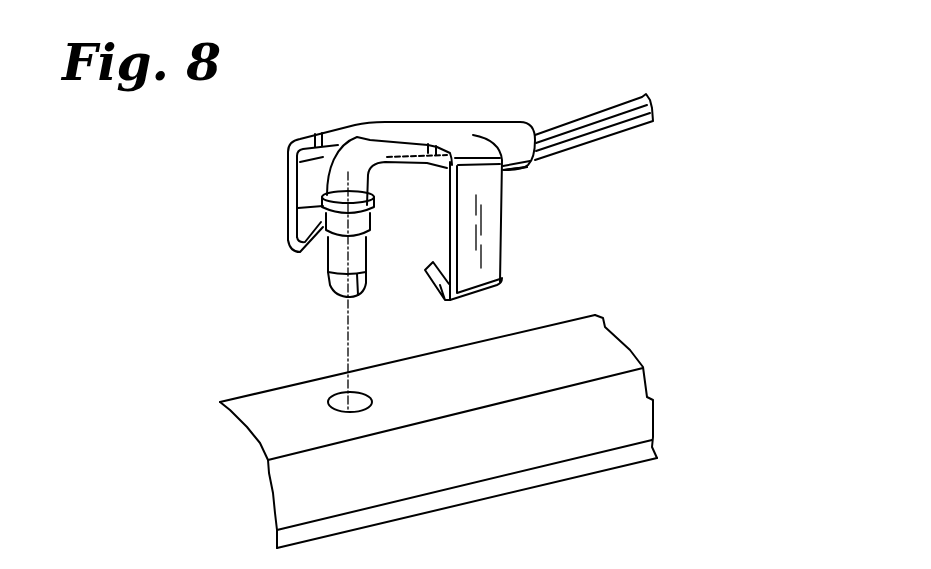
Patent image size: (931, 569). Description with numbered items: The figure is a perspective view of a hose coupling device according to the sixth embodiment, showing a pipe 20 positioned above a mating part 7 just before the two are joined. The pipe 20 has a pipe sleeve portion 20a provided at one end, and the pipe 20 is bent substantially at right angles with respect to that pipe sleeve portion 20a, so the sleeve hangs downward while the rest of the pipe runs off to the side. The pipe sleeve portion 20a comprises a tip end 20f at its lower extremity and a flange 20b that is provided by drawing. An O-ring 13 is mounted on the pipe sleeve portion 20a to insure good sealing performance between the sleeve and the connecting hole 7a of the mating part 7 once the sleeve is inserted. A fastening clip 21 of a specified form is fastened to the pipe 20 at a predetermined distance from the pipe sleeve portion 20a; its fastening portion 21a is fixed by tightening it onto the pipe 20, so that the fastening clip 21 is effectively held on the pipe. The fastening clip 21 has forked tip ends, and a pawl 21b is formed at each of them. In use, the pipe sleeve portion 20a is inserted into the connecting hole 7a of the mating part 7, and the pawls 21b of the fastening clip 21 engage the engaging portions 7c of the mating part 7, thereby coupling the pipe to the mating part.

The mating part 7 is at (423, 431).
The connecting hole 7a is at (328, 400).
The engaging portions 7c is at (557, 473).
The O-ring 13 is at (372, 228).
The pipe 20 is at (603, 109).
The pipe sleeve portion 20a is at (230, 193).
The flange 20b is at (298, 207).
The tip end 20f is at (333, 289).
The fastening clip 21 is at (445, 123).
The fastening portion 21a is at (523, 174).
The pawl 21b is at (432, 291).